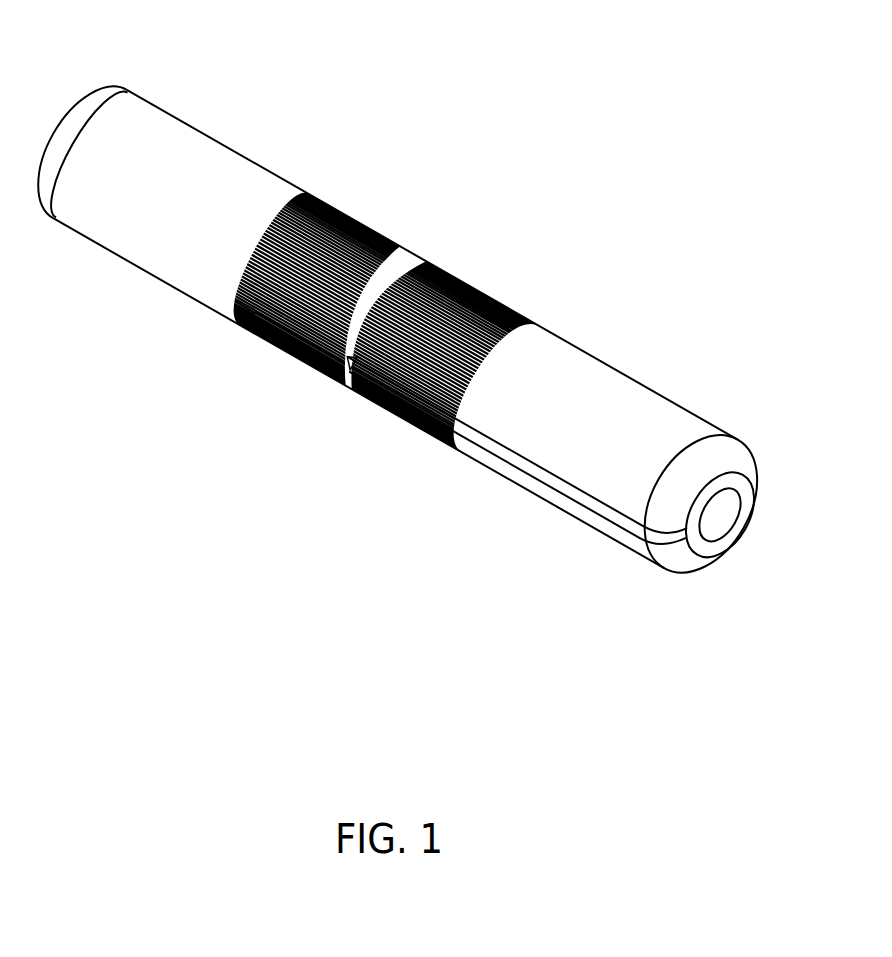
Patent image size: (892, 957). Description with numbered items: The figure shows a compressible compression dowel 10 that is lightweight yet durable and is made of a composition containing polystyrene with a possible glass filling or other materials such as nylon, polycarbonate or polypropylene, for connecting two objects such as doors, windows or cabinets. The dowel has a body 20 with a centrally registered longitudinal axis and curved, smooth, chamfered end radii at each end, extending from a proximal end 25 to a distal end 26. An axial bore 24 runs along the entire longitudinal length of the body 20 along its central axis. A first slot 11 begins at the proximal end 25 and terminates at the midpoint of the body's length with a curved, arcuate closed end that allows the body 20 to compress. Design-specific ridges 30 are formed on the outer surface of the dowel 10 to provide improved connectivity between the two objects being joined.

The compression dowel 10 is at (662, 177).
The first slot 11 is at (550, 473).
The body 20 is at (617, 387).
The axial bore 24 is at (713, 515).
The proximal end 25 is at (88, 102).
The distal end 26 is at (727, 450).
The ridges 30 is at (378, 214).